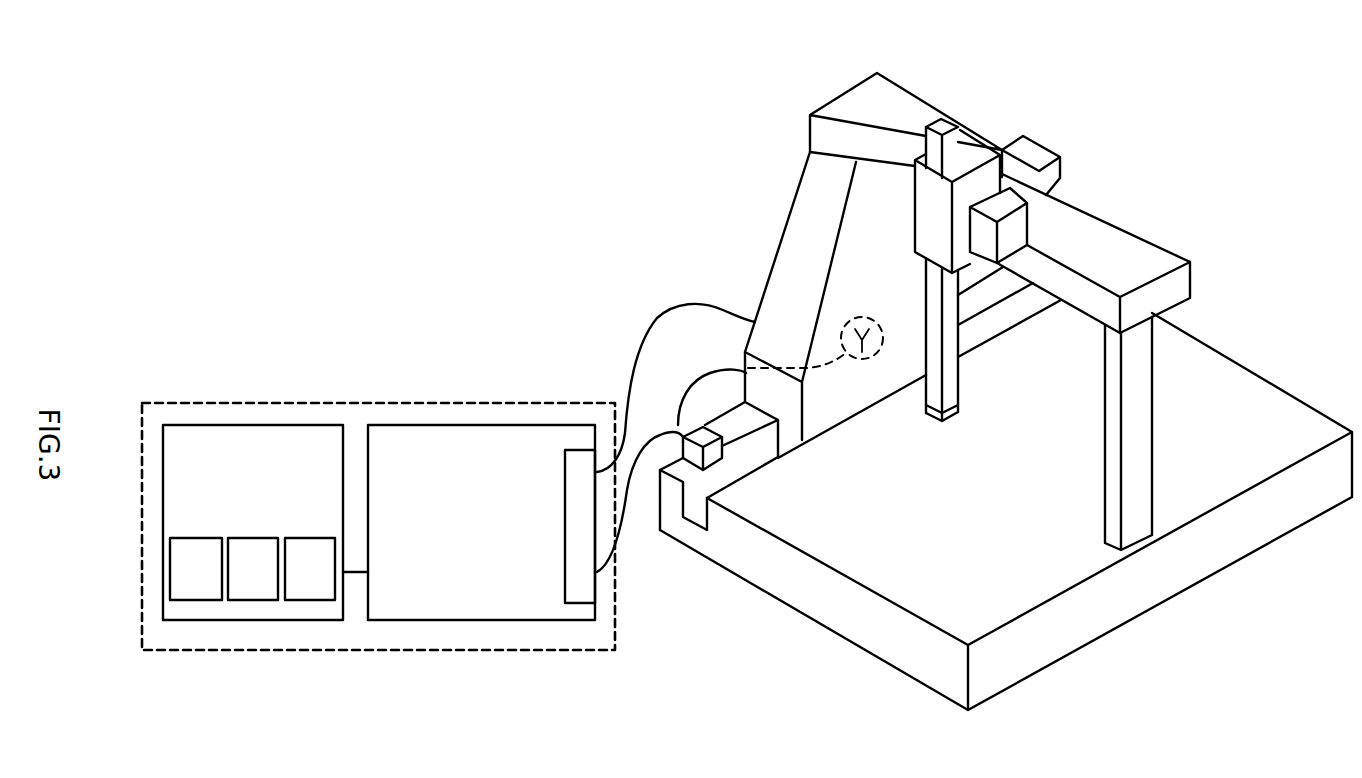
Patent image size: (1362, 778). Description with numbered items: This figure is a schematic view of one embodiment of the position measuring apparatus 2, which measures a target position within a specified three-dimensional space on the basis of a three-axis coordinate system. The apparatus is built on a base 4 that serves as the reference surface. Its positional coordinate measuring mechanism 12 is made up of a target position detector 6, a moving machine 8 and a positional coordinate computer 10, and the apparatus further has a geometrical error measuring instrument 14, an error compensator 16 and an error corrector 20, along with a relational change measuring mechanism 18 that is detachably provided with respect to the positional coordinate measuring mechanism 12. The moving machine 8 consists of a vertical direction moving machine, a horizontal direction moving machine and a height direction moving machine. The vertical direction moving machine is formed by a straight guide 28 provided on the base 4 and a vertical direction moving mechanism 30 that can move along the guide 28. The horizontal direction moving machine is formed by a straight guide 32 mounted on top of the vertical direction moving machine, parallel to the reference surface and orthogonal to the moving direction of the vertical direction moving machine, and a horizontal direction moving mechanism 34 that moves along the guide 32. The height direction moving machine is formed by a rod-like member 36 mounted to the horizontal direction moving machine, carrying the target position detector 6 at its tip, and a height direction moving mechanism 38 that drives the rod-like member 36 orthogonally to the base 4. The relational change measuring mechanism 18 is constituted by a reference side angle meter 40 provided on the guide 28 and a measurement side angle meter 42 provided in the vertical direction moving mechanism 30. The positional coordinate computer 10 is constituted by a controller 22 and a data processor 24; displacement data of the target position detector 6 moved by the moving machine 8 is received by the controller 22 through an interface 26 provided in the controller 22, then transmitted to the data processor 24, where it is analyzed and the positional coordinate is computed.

The position measuring apparatus 2 is at (698, 735).
The base 4 is at (990, 600).
The target position detector 6 is at (948, 413).
The moving machine 8 is at (764, 172).
The positional coordinate computer 10 is at (357, 403).
The positional coordinate measuring mechanism 12 is at (592, 280).
The geometrical error measuring instrument 14 is at (182, 585).
The error compensator 16 is at (239, 585).
The relational change measuring mechanism 18 is at (664, 391).
The error corrector 20 is at (296, 585).
The controller 22 is at (481, 524).
The data processor 24 is at (265, 522).
The interface 26 is at (598, 592).
The straight guide 28 is at (757, 436).
The vertical direction moving mechanism 30 is at (772, 283).
The straight guide 32 is at (1128, 242).
The horizontal direction moving mechanism 34 is at (1035, 153).
The rod-like member 36 is at (957, 368).
The height direction moving mechanism 38 is at (930, 239).
The reference side angle meter 40 is at (713, 456).
The measurement side angle meter 42 is at (846, 355).